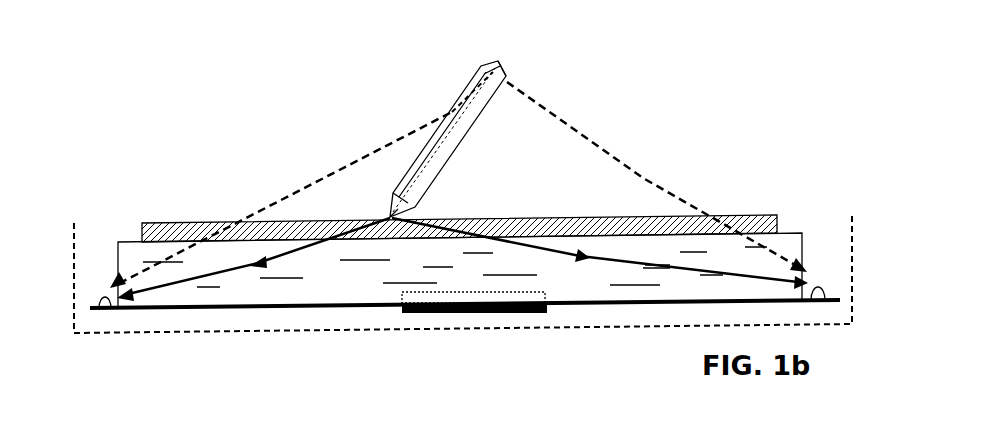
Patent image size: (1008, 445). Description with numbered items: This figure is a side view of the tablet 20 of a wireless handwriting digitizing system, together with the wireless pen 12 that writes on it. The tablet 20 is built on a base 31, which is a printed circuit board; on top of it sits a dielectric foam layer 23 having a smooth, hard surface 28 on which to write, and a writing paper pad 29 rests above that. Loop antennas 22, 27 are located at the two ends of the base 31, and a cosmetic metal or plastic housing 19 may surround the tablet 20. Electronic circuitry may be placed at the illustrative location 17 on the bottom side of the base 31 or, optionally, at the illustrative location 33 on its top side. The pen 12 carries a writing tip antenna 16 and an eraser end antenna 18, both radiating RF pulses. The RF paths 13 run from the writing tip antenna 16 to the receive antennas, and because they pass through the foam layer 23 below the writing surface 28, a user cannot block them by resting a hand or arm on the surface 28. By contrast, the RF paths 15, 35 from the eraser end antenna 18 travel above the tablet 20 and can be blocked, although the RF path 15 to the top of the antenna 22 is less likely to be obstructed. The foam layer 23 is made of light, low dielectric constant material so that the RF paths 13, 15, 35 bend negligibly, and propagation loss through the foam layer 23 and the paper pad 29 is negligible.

The wireless pen 12 is at (480, 80).
The RF paths 13 is at (290, 250).
The RF path 15 is at (395, 130).
The writing tip antenna 16 is at (402, 212).
The illustrative location of electronic circuitry 17 is at (493, 313).
The eraser end antenna 18 is at (505, 67).
The housing 19 is at (852, 315).
The tablet 20 is at (222, 149).
The antenna 22 is at (102, 287).
The dielectric foam layer 23 is at (811, 277).
The antenna 27 is at (815, 277).
The surface 28 is at (802, 252).
The writing paper pad 29 is at (752, 215).
The base 31 is at (842, 300).
The illustrative location of electronic circuitry 33 is at (400, 295).
The RF path 35 is at (587, 133).